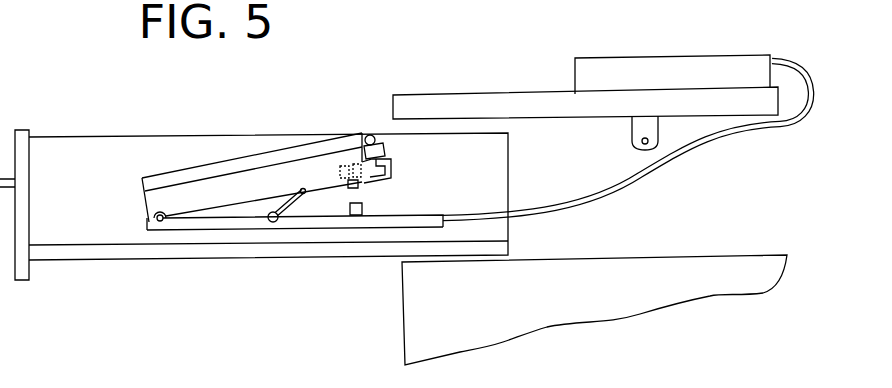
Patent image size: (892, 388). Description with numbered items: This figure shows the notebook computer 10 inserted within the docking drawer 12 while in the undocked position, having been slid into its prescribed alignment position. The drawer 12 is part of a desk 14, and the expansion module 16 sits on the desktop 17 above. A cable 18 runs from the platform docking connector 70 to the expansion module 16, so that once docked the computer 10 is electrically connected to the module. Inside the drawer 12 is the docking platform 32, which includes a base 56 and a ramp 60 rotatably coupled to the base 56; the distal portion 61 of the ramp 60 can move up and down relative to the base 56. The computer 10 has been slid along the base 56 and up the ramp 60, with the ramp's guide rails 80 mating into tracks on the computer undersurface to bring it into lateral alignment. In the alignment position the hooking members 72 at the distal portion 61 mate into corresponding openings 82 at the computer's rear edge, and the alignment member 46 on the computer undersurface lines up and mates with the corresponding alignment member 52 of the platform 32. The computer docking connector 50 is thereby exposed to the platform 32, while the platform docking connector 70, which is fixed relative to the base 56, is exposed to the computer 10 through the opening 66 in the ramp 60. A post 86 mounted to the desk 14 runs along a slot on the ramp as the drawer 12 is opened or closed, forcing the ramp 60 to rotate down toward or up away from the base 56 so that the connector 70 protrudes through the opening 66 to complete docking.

The notebook computer 10 is at (243, 157).
The docking drawer 12 is at (95, 136).
The desk 14 is at (558, 298).
The expansion module 16 is at (647, 57).
The desktop 17 is at (472, 92).
The cable 18 is at (576, 200).
The docking platform 32 is at (265, 229).
The alignment member 46 is at (157, 216).
The docking connector 50 is at (345, 163).
The alignment member 52 is at (158, 231).
The base 56 is at (228, 230).
The ramp 60 is at (303, 192).
The distal portion 61 is at (392, 180).
The opening 66 is at (348, 187).
The docking connector 70 is at (362, 215).
The hooking members 72 is at (391, 163).
The guide rails 80 is at (303, 190).
The openings 82 is at (365, 136).
The post 86 is at (650, 144).